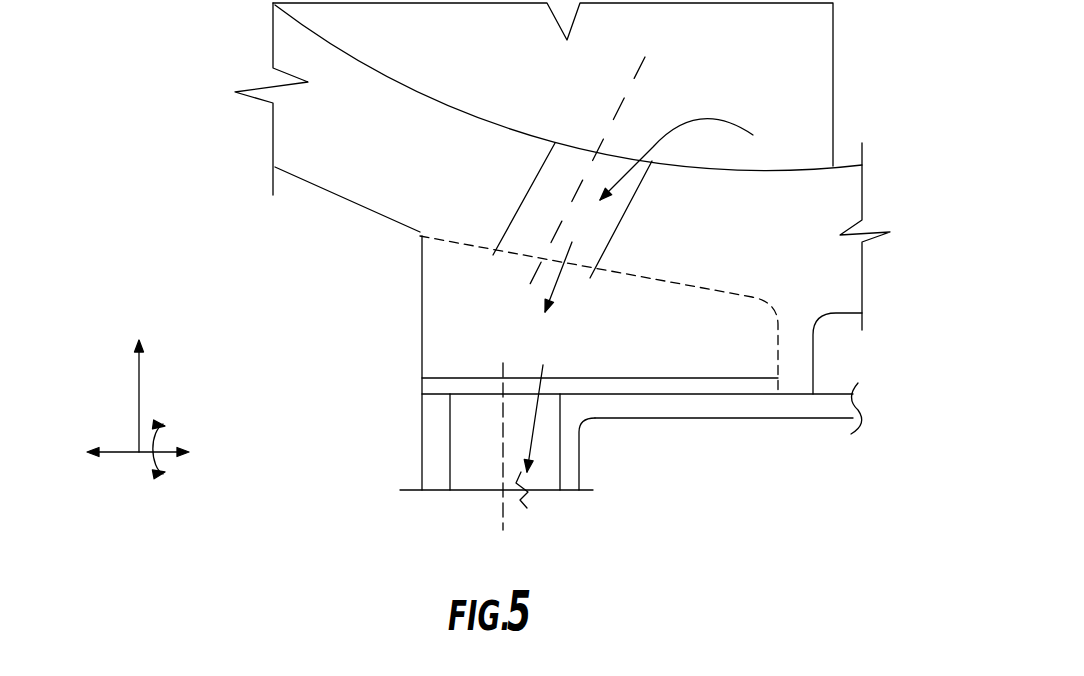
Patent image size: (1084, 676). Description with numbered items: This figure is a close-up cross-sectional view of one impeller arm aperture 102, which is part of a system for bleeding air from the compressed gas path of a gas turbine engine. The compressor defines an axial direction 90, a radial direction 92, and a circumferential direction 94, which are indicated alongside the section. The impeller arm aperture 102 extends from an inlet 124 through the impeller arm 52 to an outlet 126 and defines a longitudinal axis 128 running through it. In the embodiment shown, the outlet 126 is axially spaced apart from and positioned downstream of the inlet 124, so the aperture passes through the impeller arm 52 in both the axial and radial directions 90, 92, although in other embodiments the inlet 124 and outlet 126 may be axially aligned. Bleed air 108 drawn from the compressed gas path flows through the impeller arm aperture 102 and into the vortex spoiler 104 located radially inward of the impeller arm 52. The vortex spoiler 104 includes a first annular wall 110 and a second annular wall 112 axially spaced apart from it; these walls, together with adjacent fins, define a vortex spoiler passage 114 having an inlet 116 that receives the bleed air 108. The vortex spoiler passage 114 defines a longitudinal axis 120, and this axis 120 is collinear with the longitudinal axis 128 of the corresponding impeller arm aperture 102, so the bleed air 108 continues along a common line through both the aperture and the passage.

The impeller arm 52 is at (368, 163).
The axial direction 90 is at (120, 452).
The radial direction 92 is at (140, 388).
The circumferential direction 94 is at (148, 477).
The impeller arm aperture 102 is at (597, 213).
The vortex spoiler 104 is at (645, 441).
The bleed air 108 is at (698, 118).
The first annular wall 110 is at (579, 474).
The second annular wall 112 is at (432, 445).
The vortex spoiler passage 114 is at (477, 485).
The inlet 116 is at (470, 393).
The longitudinal axis 120 is at (503, 527).
The inlet 124 is at (573, 150).
The outlet 126 is at (510, 262).
The longitudinal axis 128 is at (641, 70).